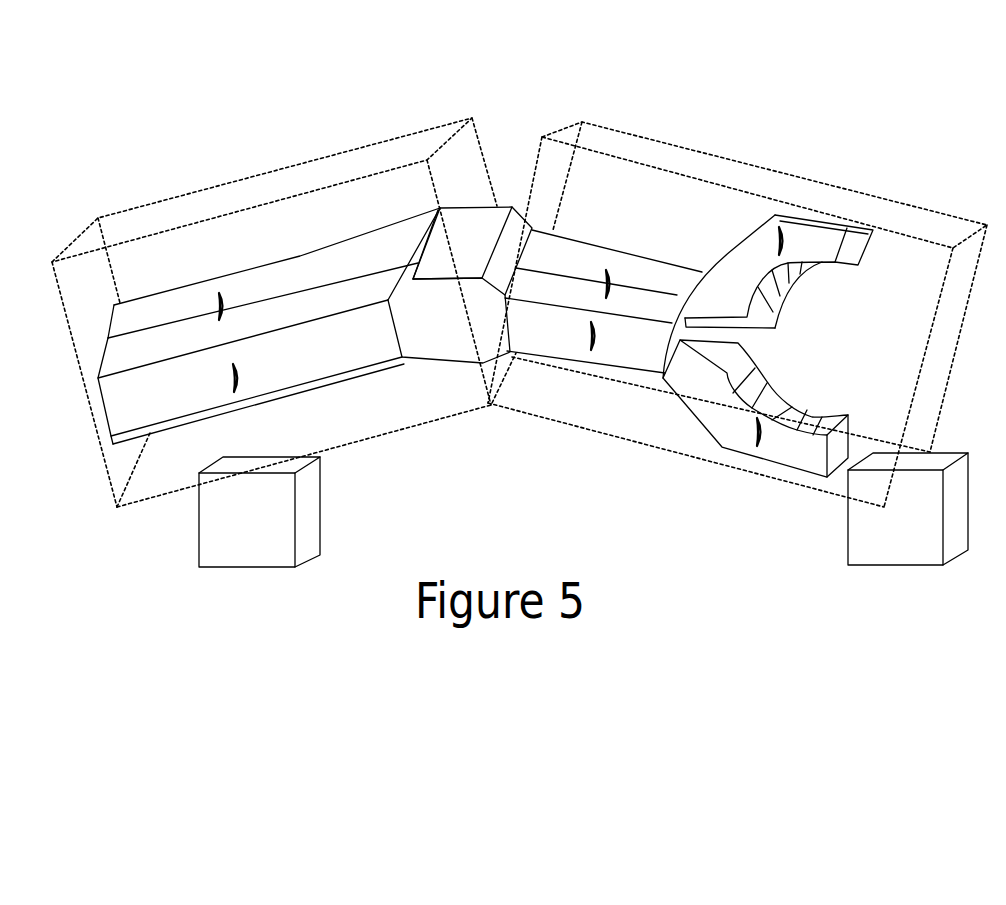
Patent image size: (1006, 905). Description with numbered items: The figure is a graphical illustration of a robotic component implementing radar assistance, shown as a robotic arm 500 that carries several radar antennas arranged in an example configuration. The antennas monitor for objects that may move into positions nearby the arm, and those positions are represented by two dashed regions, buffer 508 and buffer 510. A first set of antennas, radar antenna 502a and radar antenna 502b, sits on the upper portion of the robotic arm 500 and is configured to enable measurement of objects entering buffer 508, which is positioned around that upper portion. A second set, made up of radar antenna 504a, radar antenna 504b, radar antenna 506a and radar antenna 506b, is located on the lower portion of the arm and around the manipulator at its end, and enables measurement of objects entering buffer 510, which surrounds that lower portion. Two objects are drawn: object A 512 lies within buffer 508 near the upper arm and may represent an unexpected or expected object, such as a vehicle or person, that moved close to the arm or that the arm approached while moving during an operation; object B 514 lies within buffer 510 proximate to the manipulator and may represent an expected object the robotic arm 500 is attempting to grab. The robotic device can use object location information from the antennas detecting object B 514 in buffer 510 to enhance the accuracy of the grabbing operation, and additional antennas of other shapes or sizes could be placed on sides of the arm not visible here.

The robotic arm 500 is at (485, 252).
The radar antenna 502a is at (228, 385).
The radar antenna 502b is at (212, 320).
The radar antenna 504a is at (587, 333).
The radar antenna 504b is at (600, 283).
The radar antenna 506a is at (745, 434).
The radar antenna 506b is at (770, 240).
The buffer 508 is at (130, 218).
The buffer 510 is at (687, 158).
The object A 512 is at (262, 571).
The object B 514 is at (842, 516).